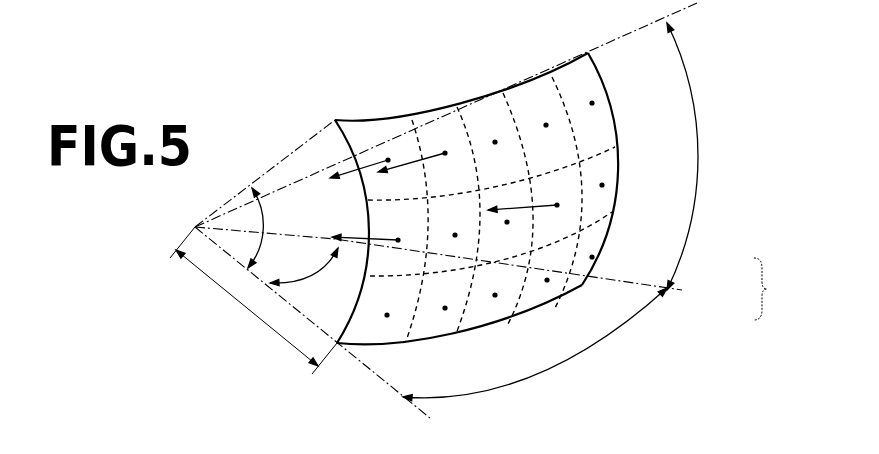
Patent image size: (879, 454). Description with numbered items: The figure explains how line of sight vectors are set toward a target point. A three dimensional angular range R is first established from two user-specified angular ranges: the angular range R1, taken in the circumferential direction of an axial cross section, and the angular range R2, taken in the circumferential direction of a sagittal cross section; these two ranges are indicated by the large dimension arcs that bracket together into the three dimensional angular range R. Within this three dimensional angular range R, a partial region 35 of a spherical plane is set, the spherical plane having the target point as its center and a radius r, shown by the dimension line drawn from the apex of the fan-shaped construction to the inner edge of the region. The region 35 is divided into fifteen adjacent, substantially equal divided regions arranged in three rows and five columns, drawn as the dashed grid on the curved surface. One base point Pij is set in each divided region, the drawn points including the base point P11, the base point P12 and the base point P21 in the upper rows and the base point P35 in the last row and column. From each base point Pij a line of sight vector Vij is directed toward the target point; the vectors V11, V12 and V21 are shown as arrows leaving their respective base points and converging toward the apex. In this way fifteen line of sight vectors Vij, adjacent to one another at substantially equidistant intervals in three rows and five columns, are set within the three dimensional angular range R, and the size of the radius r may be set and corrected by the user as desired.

The partial region of a spherical plane 35 is at (353, 120).
The base point P11 is at (388, 157).
The base point P12 is at (498, 89).
The base point P21 is at (399, 238).
The base point Pij is at (560, 205).
The base point P35 is at (602, 253).
The line of sight vector V11 is at (329, 176).
The line of sight vector V12 is at (428, 157).
The line of sight vector V21 is at (340, 236).
The line of sight vector Vij is at (520, 207).
The radius r is at (253, 300).
The angular range R1 is at (622, 330).
The angular range R2 is at (725, 273).
The three dimensional angular range R is at (769, 289).